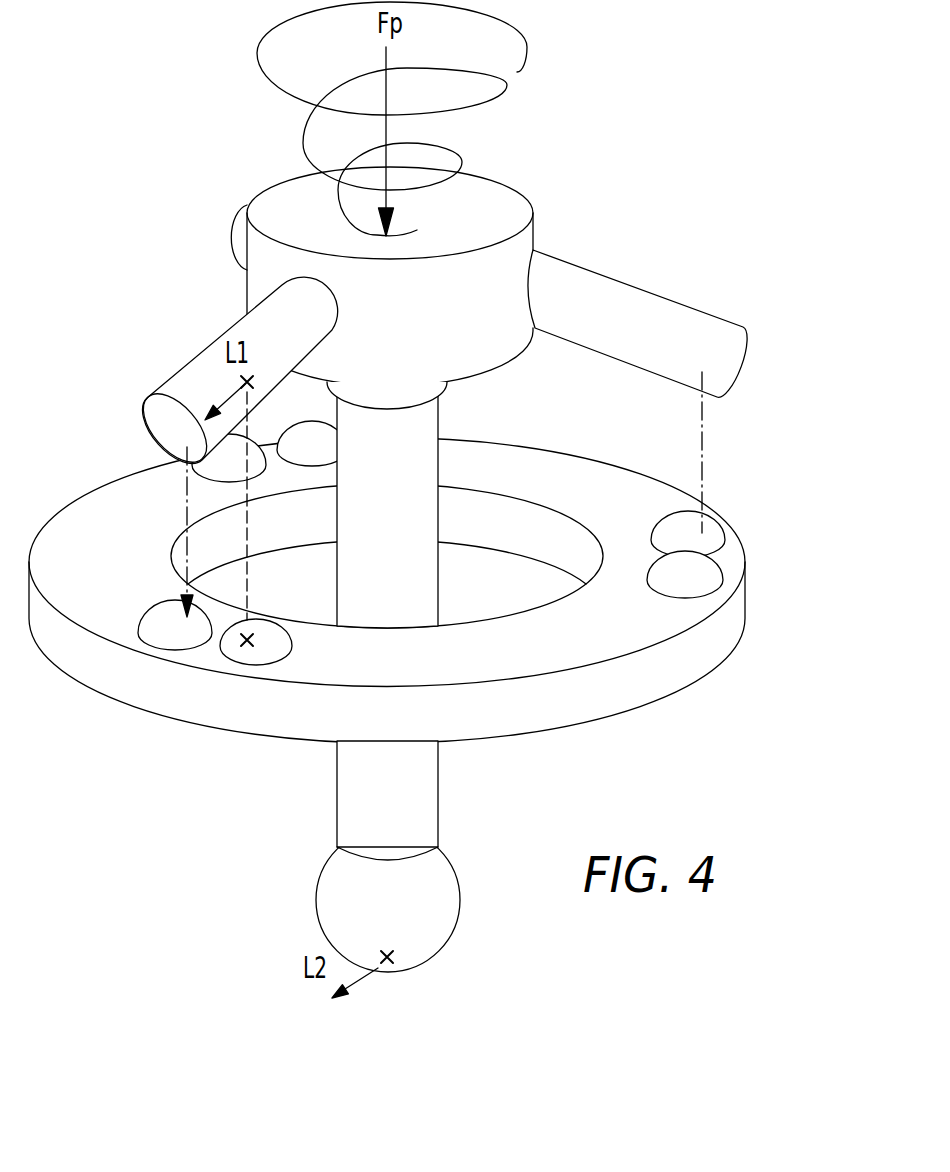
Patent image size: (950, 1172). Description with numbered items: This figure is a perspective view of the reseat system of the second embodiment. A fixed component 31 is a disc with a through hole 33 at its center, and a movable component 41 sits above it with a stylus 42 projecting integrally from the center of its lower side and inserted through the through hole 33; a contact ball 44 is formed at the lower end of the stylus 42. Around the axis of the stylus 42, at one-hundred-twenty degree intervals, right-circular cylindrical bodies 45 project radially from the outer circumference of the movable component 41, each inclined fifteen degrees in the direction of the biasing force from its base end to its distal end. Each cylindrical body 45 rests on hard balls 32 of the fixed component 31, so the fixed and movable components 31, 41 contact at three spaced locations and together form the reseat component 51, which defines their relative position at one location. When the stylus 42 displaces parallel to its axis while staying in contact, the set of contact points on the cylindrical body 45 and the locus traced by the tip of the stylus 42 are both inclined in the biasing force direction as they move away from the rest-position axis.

The fixed component 31 is at (637, 627).
The hard ball 32 is at (321, 438).
The through hole 33 is at (495, 603).
The movable component 41 is at (493, 194).
The stylus 42 is at (352, 772).
The contact ball 44 is at (420, 938).
The cylindrical body 45 is at (668, 318).
The reseat component 51 is at (507, 571).